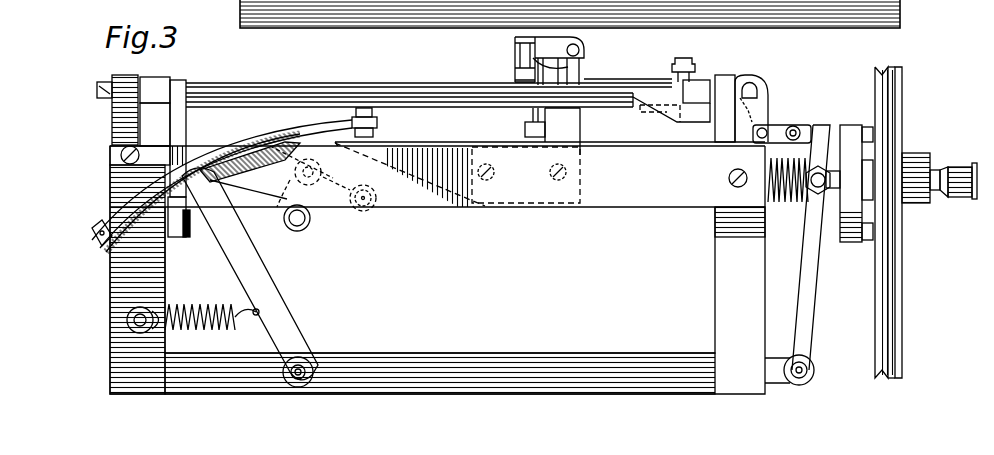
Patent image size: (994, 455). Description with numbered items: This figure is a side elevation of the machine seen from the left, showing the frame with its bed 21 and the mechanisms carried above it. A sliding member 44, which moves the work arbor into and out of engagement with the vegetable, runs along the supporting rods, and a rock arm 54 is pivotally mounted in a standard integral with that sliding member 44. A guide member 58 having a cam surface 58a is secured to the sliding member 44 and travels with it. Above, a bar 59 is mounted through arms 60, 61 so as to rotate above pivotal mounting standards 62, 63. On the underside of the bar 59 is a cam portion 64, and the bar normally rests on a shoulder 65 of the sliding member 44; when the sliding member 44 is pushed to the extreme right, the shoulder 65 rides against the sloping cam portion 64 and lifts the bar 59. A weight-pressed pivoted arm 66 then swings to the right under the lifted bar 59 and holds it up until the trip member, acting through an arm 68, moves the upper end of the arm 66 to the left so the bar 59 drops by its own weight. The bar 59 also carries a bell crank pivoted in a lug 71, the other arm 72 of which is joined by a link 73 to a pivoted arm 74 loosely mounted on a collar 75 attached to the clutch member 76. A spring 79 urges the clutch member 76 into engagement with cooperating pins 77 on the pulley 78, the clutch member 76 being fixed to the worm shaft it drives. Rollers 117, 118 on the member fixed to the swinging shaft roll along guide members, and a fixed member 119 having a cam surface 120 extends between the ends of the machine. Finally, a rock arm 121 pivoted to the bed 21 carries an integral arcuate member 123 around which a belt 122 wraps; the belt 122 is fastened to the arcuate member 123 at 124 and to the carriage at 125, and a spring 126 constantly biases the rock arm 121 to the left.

The bed 21 is at (374, 357).
The sliding member 44 is at (590, 79).
The rock arm 54 is at (575, 66).
The guide member 58 is at (519, 197).
The cam surface 58a is at (437, 195).
The bar 59 is at (318, 84).
The arm 60 is at (698, 88).
The arm 61 is at (157, 86).
The pivotal mounting standard 62 is at (728, 122).
The pivotal mounting standard 63 is at (122, 119).
The cam portion 64 is at (666, 110).
The shoulder 65 is at (572, 120).
The pivoted arm 66 is at (186, 120).
The arm 68 is at (186, 237).
The lug 71 is at (762, 82).
The arm 72 is at (778, 127).
The link 73 is at (798, 126).
The pivoted arm 74 is at (808, 282).
The collar 75 is at (815, 195).
The clutch member 76 is at (853, 170).
The pins 77 is at (868, 240).
The pulley 78 is at (884, 178).
The spring 79 is at (804, 192).
The roller 117 is at (345, 208).
The roller 118 is at (290, 226).
The member 119 is at (615, 195).
The cam surface 120 is at (240, 185).
The rock arm 121 is at (280, 330).
The belt 122 is at (108, 183).
The arcuate member 123 is at (115, 200).
The attachment point 124 is at (92, 231).
The attachment point 125 is at (378, 124).
The spring 126 is at (190, 305).